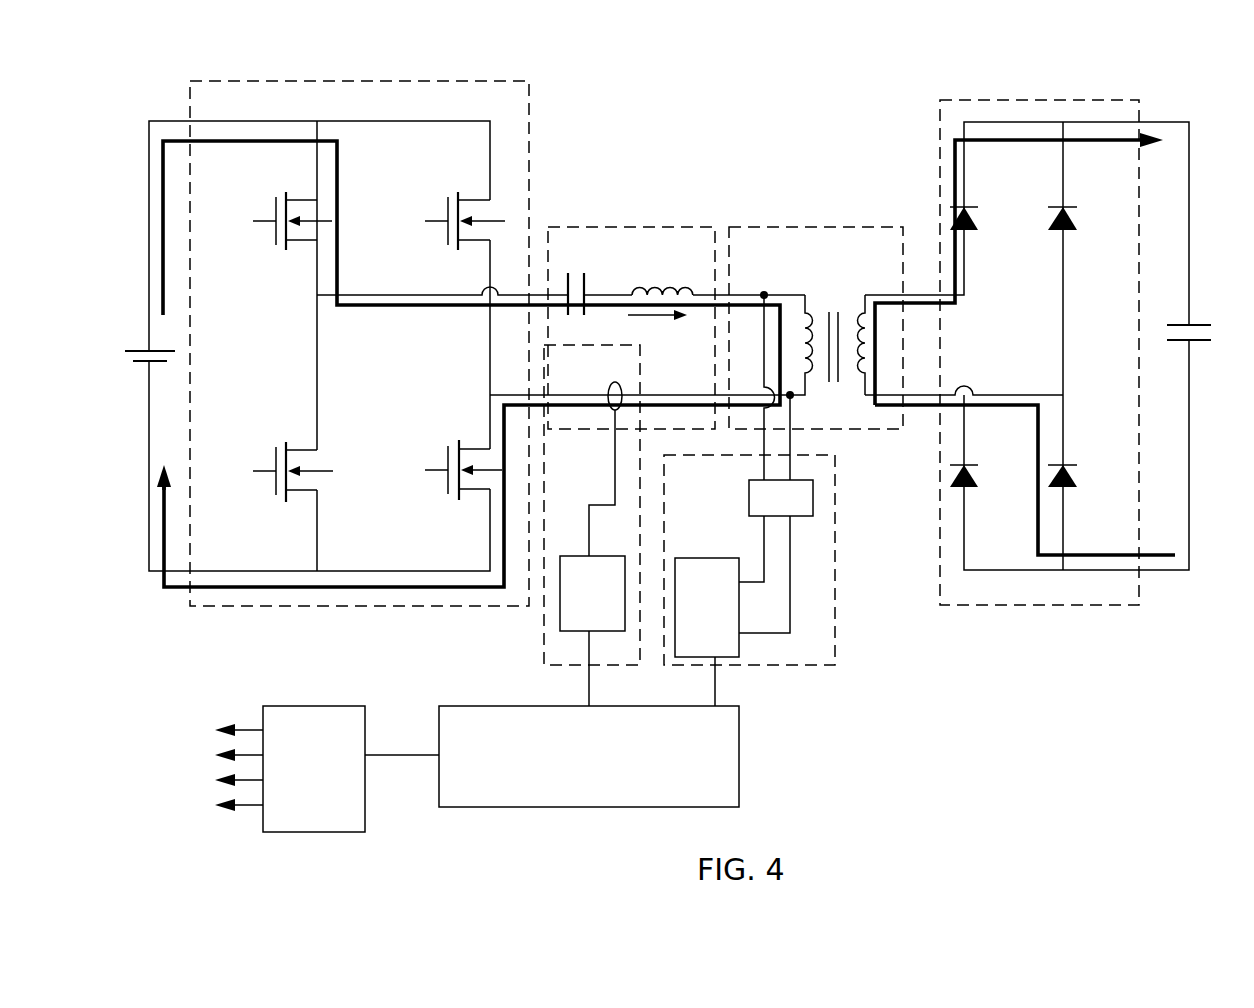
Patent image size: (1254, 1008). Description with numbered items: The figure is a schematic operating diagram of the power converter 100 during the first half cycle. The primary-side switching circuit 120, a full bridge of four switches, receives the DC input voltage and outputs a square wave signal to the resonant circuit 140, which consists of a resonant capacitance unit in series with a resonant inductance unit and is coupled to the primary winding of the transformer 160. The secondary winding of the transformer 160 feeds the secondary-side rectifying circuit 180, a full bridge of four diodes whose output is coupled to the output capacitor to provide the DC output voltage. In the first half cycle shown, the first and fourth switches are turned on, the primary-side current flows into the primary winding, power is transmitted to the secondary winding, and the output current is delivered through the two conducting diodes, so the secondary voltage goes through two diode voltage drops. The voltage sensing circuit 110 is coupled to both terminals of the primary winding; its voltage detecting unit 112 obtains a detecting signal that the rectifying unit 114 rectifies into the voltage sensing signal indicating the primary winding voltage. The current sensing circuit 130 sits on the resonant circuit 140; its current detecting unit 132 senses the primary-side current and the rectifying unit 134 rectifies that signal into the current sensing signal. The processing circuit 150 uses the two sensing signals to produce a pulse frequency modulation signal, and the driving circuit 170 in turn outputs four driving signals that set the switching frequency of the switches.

The power converter 100 is at (112, 88).
The voltage sensing circuit 110 is at (802, 667).
The voltage detecting unit 112 is at (817, 550).
The rectifying unit 114 is at (693, 528).
The primary-side switching circuit 120 is at (529, 173).
The current sensing circuit 130 is at (545, 632).
The current detecting unit 132 is at (608, 380).
The rectifying unit 134 is at (530, 618).
The resonant circuit 140 is at (665, 225).
The processing circuit 150 is at (605, 767).
The transformer 160 is at (813, 225).
The driving circuit 170 is at (330, 779).
The secondary-side rectifying circuit 180 is at (1013, 607).